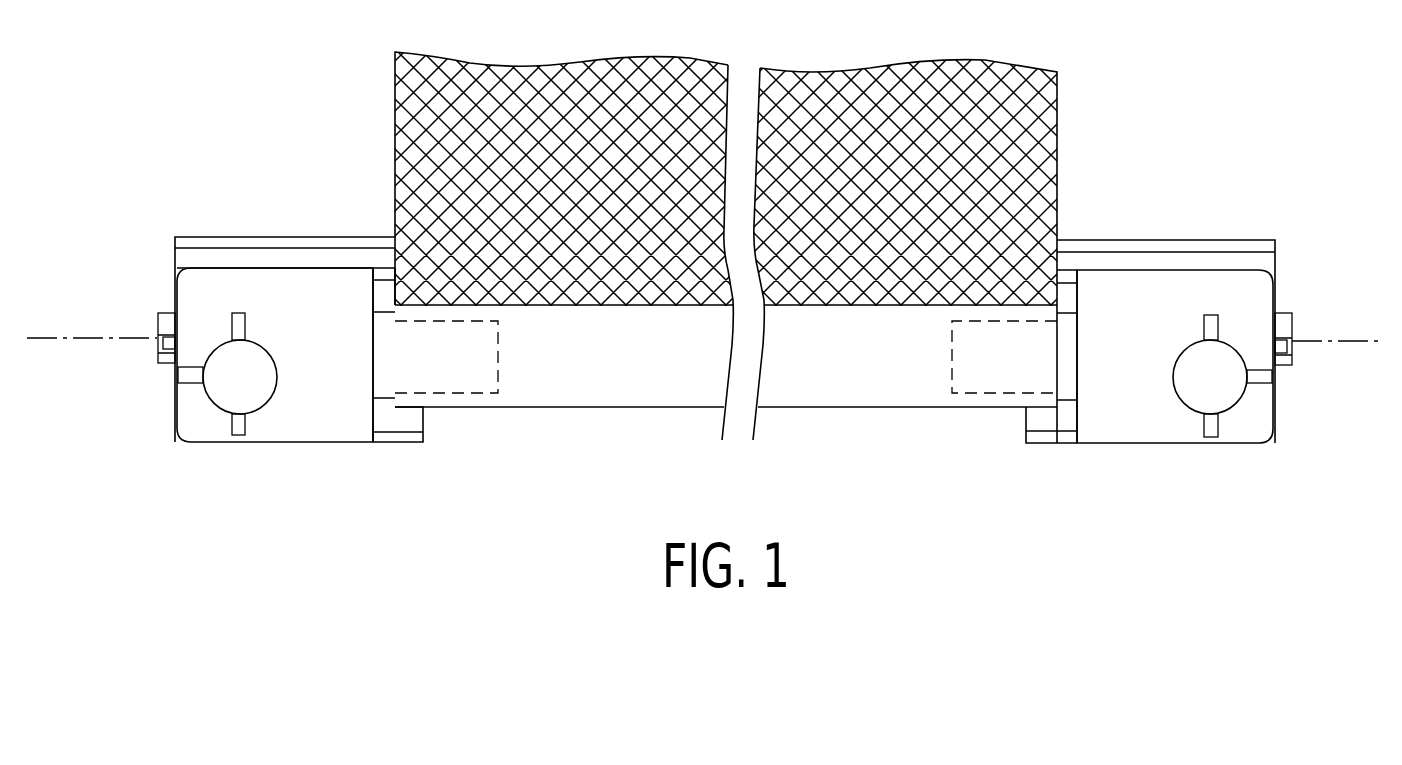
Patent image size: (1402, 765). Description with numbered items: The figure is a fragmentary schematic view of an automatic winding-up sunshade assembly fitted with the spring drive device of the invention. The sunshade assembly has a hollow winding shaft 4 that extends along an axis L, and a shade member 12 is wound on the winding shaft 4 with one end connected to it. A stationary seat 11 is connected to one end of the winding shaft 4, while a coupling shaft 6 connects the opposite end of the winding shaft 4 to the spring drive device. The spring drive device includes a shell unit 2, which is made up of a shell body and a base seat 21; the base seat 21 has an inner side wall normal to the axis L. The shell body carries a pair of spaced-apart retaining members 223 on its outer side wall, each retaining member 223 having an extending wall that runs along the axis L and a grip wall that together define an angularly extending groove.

The shell unit 2 is at (214, 234).
The base seat 21 is at (299, 450).
The retaining members 223 is at (167, 318).
The winding shaft 4 is at (601, 375).
The coupling shaft 6 is at (445, 378).
The stationary seat 11 is at (1185, 282).
The shade member 12 is at (1008, 157).
The axis L is at (705, 361).